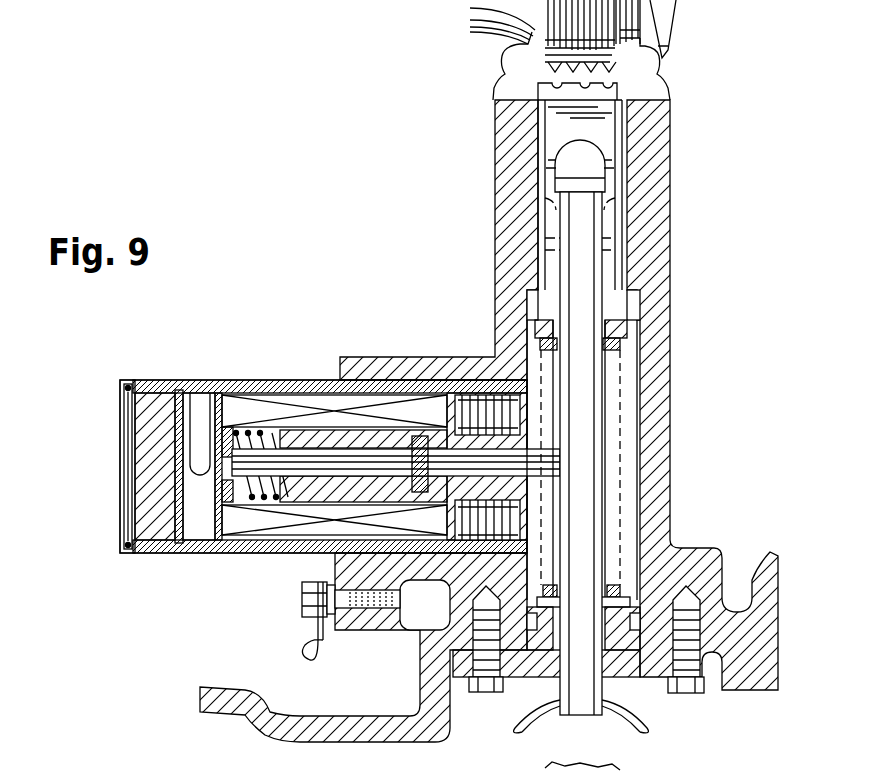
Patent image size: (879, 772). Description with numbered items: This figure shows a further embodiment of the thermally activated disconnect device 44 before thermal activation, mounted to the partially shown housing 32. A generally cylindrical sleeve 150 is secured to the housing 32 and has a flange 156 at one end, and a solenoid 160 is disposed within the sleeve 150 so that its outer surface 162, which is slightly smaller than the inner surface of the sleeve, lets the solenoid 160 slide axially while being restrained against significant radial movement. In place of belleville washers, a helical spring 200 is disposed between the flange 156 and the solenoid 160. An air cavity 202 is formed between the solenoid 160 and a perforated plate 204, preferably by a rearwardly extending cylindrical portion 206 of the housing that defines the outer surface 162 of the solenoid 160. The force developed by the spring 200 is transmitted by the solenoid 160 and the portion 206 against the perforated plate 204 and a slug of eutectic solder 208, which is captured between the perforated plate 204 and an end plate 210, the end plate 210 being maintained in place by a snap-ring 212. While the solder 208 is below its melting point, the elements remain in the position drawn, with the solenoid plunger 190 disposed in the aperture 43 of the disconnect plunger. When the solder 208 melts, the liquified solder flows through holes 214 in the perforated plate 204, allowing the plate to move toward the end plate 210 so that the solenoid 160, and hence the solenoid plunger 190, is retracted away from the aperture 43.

The housing 32 is at (441, 357).
The aperture 43 is at (540, 457).
The disconnect device 44 is at (272, 555).
The sleeve 150 is at (174, 390).
The flange 156 is at (520, 405).
The solenoid 160 is at (300, 398).
The outer surface 162 is at (230, 387).
The solenoid plunger 190 is at (565, 470).
The helical spring 200 is at (520, 538).
The air cavity 202 is at (197, 517).
The perforated plate 204 is at (168, 390).
The cylindrical portion 206 is at (205, 550).
The solder 208 is at (157, 540).
The end plate 210 is at (180, 407).
The snap-ring 212 is at (120, 398).
The holes 214 is at (177, 447).